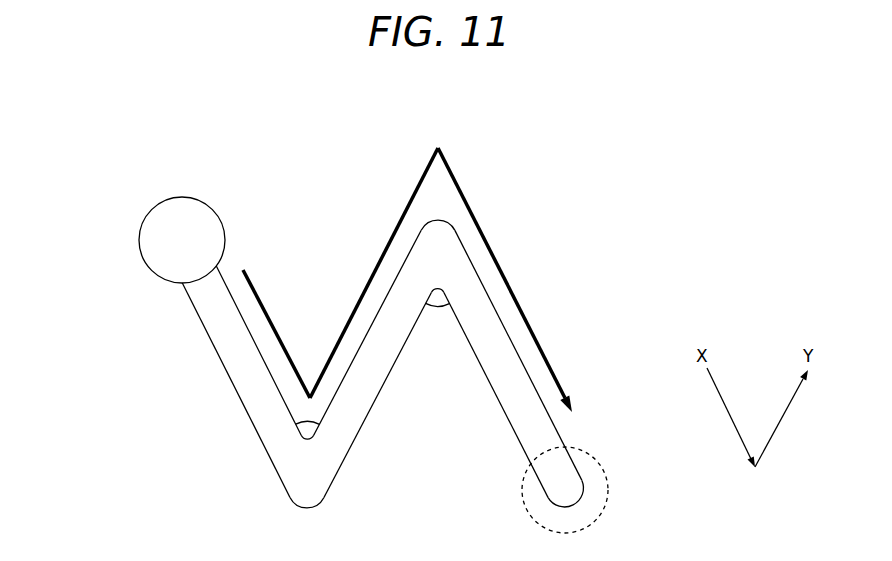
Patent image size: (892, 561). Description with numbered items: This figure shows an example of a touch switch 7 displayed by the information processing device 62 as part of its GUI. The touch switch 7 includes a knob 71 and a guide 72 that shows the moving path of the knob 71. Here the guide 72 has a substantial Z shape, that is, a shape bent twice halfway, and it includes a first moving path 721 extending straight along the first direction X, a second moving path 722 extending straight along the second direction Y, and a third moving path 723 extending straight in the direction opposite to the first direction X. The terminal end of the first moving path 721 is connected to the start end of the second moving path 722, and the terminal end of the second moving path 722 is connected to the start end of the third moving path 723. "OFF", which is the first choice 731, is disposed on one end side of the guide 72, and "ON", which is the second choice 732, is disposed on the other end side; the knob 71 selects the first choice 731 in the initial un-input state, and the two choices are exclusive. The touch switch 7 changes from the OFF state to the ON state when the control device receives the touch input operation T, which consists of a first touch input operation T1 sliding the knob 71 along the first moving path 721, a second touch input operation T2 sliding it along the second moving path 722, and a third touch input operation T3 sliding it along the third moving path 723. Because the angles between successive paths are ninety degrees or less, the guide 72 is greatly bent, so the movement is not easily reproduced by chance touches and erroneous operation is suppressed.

The operation device 62 is at (86, 82).
The touch switch 7 is at (374, 284).
The knob 71 is at (181, 215).
The guide 72 is at (380, 364).
The first moving path 721 is at (242, 365).
The second moving path 722 is at (338, 438).
The third moving path 723 is at (498, 347).
The first choice 731 is at (271, 203).
The second choice 732 is at (642, 460).
The touch input operation T is at (413, 248).
The first touch input operation T1 is at (258, 297).
The second touch input operation T2 is at (407, 213).
The third touch input operation T3 is at (505, 280).